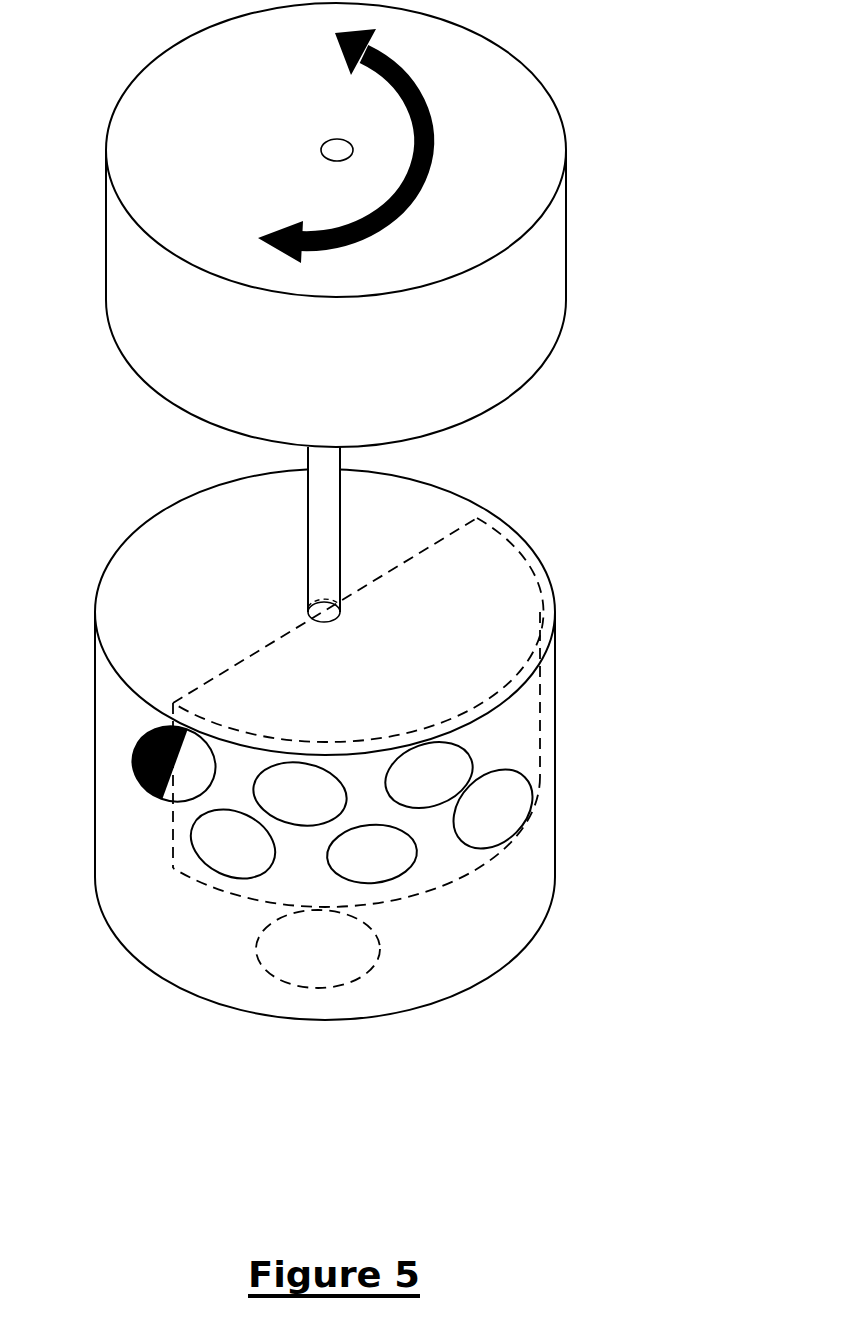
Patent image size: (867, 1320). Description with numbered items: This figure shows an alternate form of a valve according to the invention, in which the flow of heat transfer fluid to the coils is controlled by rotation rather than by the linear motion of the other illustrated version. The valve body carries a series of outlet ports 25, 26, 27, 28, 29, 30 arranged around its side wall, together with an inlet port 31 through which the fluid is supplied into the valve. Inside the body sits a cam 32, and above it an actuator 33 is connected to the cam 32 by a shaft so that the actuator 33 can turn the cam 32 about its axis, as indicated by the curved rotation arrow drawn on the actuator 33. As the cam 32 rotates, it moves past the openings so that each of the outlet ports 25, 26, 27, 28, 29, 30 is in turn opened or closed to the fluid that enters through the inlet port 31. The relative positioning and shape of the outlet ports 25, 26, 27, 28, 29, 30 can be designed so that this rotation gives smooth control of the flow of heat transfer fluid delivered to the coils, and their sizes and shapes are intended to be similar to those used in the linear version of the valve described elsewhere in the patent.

The outlet port 25 is at (163, 793).
The outlet port 26 is at (217, 873).
The outlet port 27 is at (305, 832).
The outlet port 28 is at (392, 887).
The outlet port 29 is at (437, 807).
The outlet port 30 is at (478, 855).
The inlet port 31 is at (353, 987).
The cam 32 is at (483, 612).
The actuator 33 is at (582, 268).